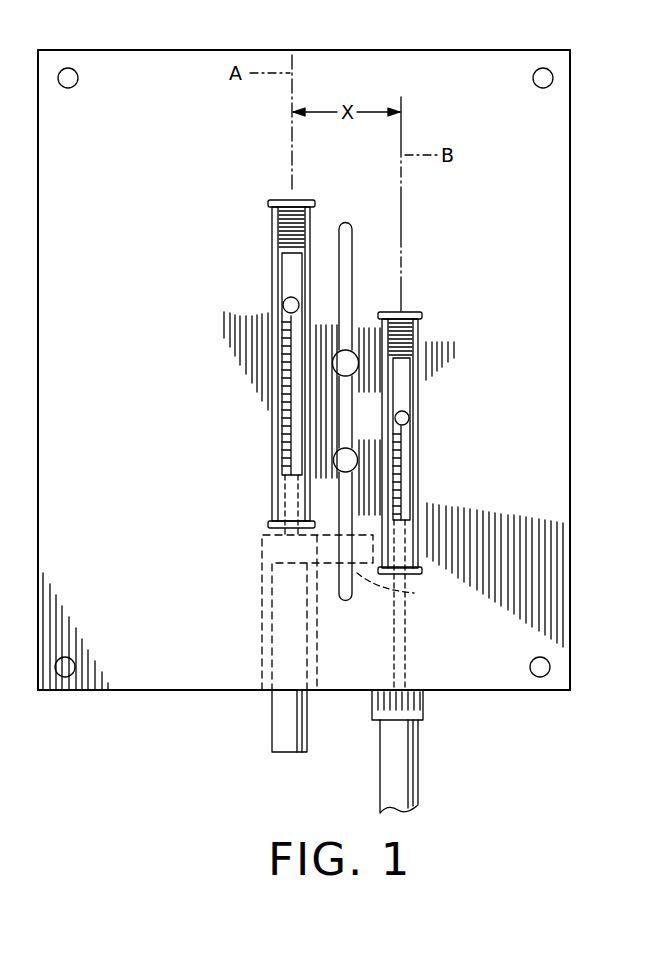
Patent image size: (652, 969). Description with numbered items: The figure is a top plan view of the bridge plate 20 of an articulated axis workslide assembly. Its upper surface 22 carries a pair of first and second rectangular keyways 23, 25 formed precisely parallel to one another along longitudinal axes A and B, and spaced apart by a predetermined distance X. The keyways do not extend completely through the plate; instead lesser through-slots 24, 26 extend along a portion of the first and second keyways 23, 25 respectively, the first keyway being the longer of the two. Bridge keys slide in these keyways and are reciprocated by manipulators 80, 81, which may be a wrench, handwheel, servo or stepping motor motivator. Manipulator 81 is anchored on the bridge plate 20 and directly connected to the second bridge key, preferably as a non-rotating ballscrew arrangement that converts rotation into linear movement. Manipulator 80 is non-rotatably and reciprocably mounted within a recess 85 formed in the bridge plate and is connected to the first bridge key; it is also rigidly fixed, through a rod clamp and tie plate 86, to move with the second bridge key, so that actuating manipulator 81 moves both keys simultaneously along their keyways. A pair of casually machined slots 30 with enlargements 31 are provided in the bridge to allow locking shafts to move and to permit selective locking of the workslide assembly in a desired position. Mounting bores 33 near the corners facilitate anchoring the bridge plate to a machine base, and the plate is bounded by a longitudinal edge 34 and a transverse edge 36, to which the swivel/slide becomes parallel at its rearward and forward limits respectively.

The bridge plate 20 is at (582, 220).
The upper surface 22 is at (137, 563).
The first rectangular keyway 23 is at (273, 236).
The through-slot 24 is at (279, 292).
The second rectangular keyway 25 is at (416, 340).
The through-slot 26 is at (410, 402).
The slots 30 is at (353, 231).
The enlargements 31 is at (353, 369).
The mounting bores 33 is at (553, 78).
The longitudinal edge 34 is at (571, 312).
The transverse edge 36 is at (155, 692).
The manipulator 80 is at (278, 738).
The manipulator 81 is at (388, 785).
The recess 85 is at (262, 645).
The tie plate 86 is at (398, 588).